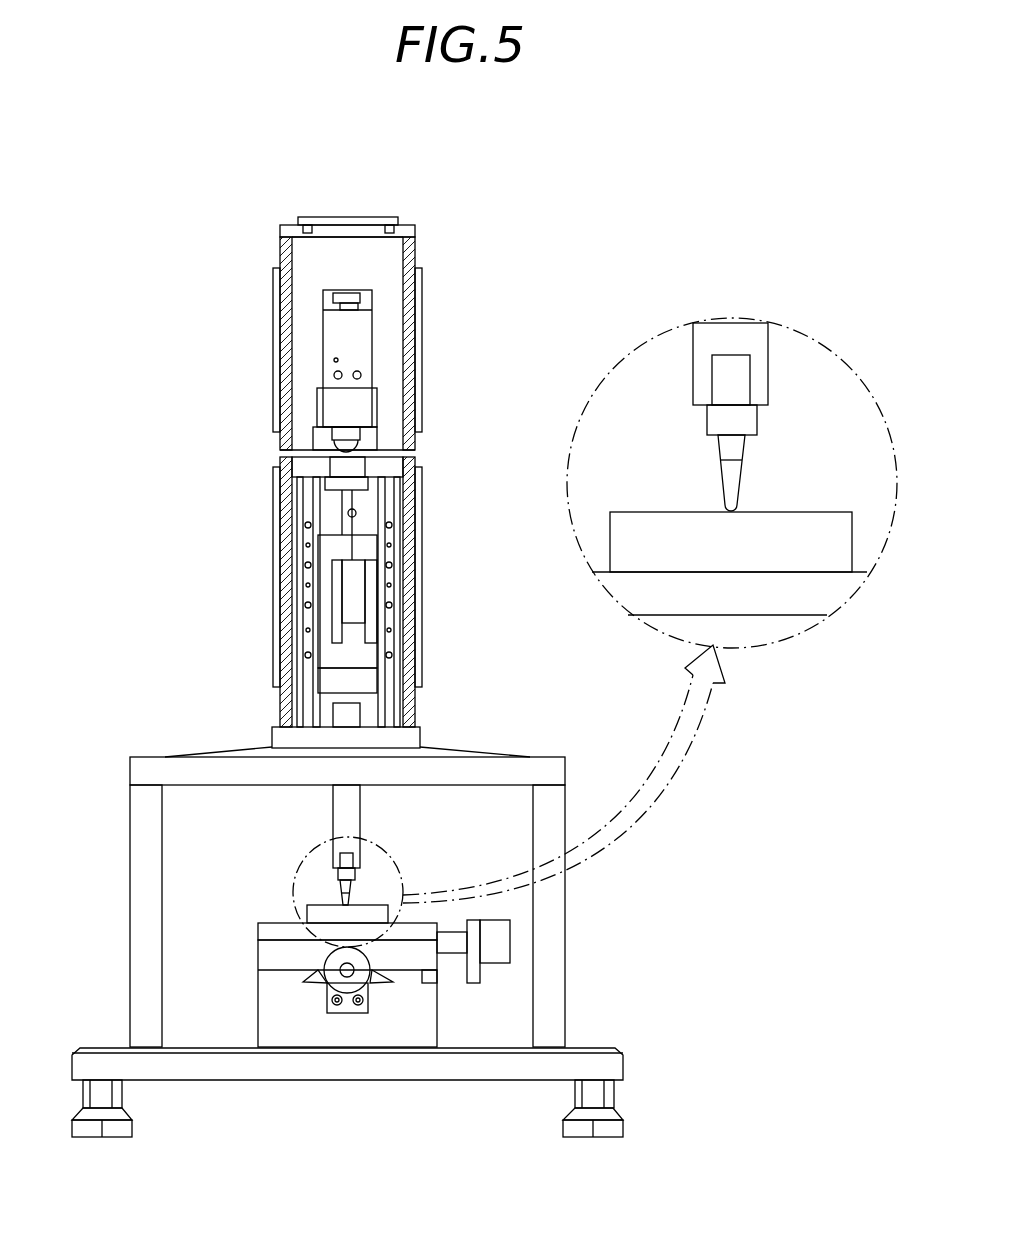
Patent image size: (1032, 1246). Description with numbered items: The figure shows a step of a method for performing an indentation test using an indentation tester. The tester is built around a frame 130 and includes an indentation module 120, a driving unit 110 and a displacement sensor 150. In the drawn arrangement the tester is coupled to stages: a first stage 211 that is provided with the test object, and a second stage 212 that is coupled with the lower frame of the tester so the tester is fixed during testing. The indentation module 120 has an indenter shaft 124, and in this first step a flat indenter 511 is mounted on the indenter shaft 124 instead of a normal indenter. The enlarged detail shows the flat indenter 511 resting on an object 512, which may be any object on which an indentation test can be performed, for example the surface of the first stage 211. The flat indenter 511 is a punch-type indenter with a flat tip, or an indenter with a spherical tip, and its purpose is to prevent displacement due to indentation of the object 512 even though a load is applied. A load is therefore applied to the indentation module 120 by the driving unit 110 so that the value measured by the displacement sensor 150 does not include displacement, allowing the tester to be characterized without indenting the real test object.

The driving unit 110 is at (322, 298).
The indentation module 120 is at (330, 655).
The indenter shaft 124 is at (750, 327).
The frame 130 is at (387, 496).
The displacement sensor 150 is at (350, 597).
The first stage 211 is at (253, 930).
The second stage 212 is at (185, 768).
The flat indenter 511 is at (725, 475).
The object 512 is at (360, 683).